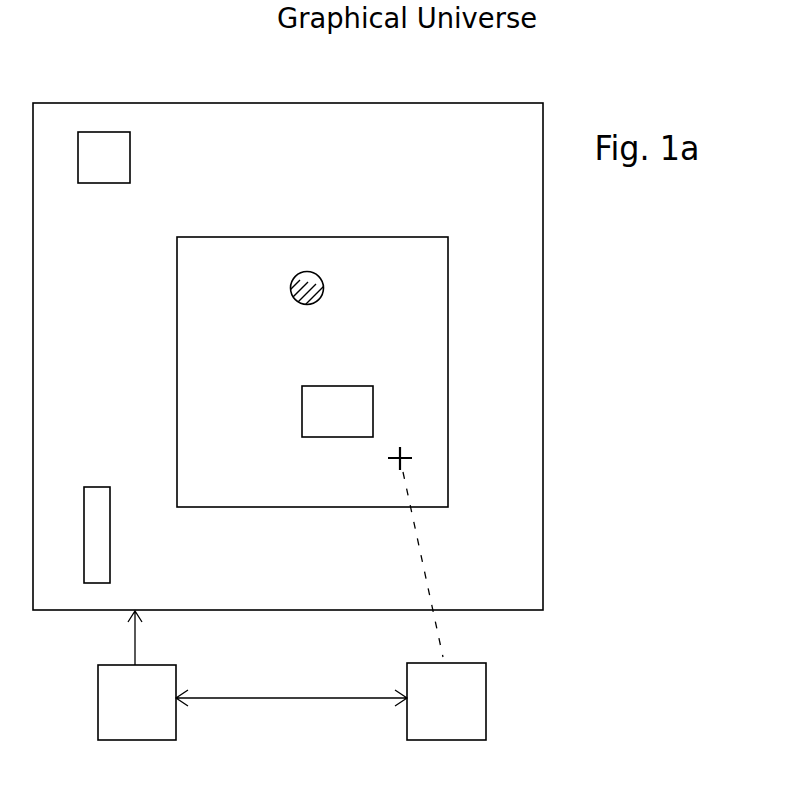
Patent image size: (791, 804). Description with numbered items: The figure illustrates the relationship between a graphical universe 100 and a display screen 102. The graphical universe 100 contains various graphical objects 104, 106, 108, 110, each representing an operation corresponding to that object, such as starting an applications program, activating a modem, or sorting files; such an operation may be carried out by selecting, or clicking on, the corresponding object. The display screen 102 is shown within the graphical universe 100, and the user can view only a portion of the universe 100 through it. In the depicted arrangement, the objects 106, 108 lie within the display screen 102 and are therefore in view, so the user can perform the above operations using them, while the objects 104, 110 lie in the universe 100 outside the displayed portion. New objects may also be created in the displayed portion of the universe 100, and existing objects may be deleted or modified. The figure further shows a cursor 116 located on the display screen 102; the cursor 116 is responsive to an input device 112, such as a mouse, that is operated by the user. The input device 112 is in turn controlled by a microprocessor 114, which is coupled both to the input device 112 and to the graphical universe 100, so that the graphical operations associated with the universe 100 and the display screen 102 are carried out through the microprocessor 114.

The graphical universe 100 is at (333, 103).
The display screen 102 is at (375, 237).
The graphical object 104 is at (130, 164).
The graphical object 106 is at (324, 283).
The graphical object 108 is at (340, 386).
The graphical object 110 is at (110, 567).
The input device 112 is at (486, 700).
The microprocessor 114 is at (98, 708).
The cursor 116 is at (408, 449).